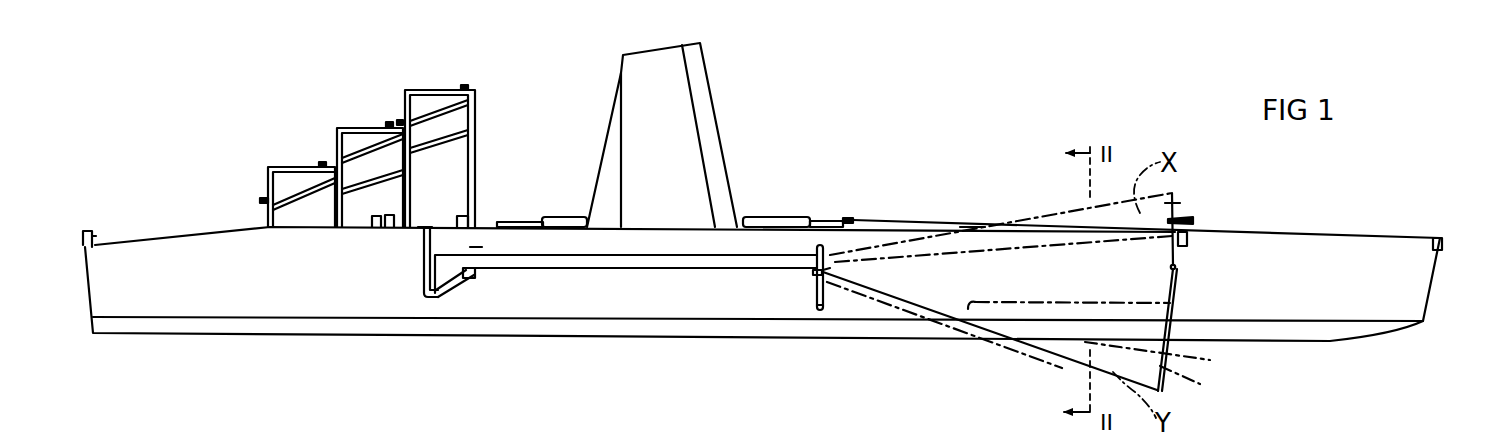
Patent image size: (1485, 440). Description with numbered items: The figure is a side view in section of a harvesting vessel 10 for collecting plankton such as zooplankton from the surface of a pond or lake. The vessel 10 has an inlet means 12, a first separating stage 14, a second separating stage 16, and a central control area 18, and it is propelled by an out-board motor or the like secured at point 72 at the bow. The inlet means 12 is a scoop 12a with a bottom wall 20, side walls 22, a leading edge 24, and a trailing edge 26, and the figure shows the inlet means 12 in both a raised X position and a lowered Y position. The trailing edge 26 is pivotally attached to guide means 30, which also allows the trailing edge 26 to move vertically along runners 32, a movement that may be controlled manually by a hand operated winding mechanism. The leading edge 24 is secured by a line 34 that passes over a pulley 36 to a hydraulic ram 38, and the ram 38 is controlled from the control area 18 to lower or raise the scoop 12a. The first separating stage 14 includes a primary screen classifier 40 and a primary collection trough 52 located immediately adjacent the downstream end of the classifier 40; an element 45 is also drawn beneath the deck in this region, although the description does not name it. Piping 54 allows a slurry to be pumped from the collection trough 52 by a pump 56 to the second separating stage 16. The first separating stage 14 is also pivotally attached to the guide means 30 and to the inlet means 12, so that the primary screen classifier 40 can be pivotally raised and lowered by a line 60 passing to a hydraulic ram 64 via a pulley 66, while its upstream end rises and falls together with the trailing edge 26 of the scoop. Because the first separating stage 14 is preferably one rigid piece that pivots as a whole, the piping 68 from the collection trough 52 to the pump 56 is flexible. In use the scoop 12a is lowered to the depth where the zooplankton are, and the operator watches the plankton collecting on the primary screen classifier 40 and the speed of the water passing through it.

The harvesting vessel 10 is at (816, 128).
The inlet means 12 is at (1175, 203).
The scoop 12a is at (967, 263).
The first separating stage 14 is at (673, 286).
The second separating stage 16 is at (447, 79).
The central control area 18 is at (723, 80).
The bottom wall 20 is at (1058, 375).
The side walls 22 is at (1193, 222).
The leading edge 24 is at (1200, 385).
The trailing edge 26 is at (824, 279).
The guide means 30 is at (816, 275).
The runners 32 is at (816, 302).
The line 34 is at (1211, 360).
The pulley 36 is at (1193, 226).
The hydraulic ram 38 is at (767, 220).
The primary screen classifier 40 is at (576, 262).
The sloped member 45 is at (440, 300).
The primary collection trough 52 is at (456, 278).
The piping 54 is at (423, 276).
The pump 56 is at (385, 229).
The line 60 is at (470, 247).
The hydraulic ram 64 is at (563, 220).
The pulley 66 is at (465, 268).
The piping 68 is at (421, 227).
The point 72 is at (93, 237).